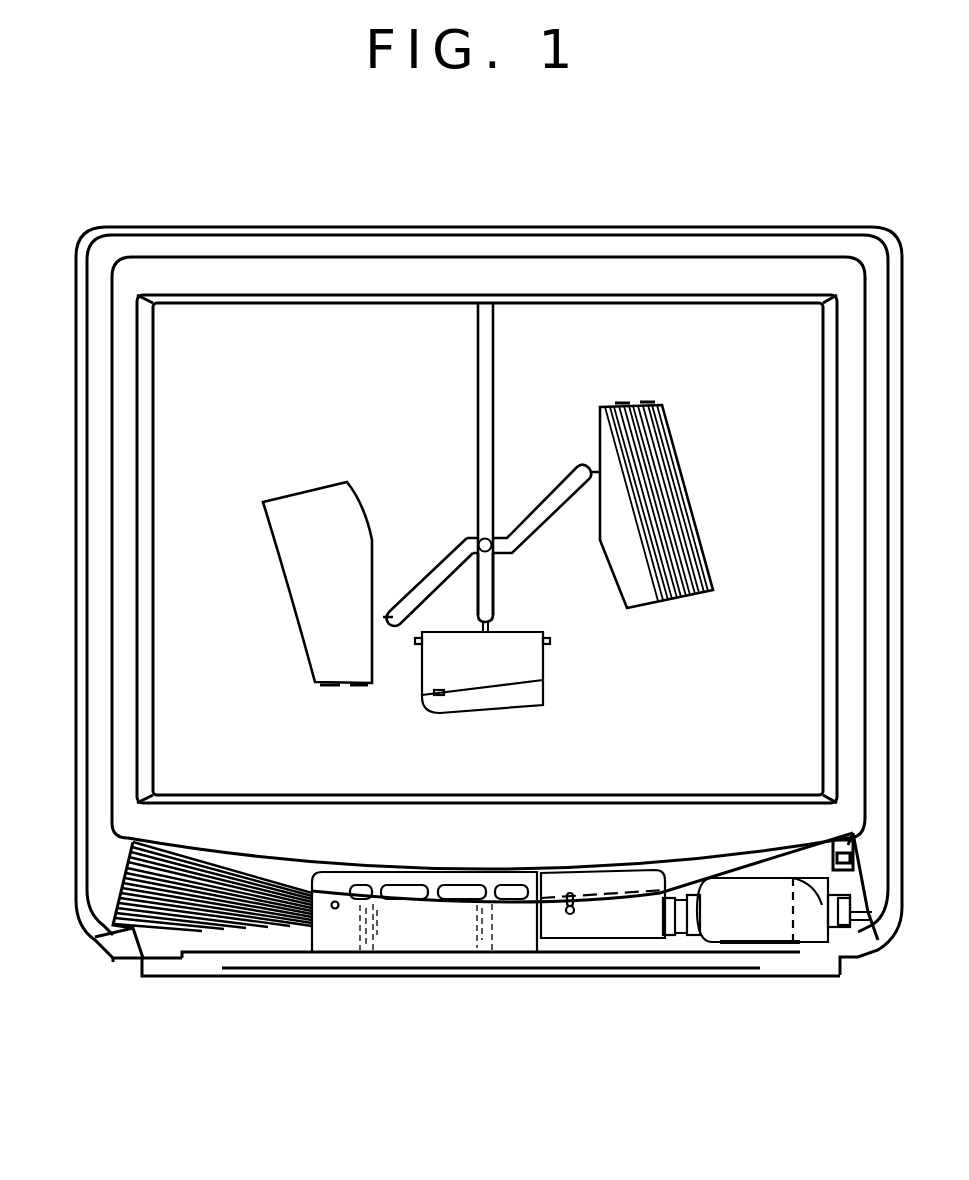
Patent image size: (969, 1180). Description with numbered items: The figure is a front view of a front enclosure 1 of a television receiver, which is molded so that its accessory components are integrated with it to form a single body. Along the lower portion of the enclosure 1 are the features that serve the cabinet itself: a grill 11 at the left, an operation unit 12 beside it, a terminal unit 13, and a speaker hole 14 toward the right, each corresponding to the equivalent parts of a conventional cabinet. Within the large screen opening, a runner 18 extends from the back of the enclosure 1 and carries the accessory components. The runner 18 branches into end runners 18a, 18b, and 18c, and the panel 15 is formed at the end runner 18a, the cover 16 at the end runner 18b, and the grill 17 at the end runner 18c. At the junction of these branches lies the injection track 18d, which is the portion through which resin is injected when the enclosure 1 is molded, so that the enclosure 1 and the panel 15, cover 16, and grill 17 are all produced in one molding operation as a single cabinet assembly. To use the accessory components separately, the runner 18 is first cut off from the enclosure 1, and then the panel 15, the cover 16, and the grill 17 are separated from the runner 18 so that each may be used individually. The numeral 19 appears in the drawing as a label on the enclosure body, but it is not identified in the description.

The front enclosure 1 is at (62, 1021).
The grill 11 is at (160, 928).
The operation unit 12 is at (434, 937).
The terminal unit 13 is at (580, 927).
The speaker hole 14 is at (757, 927).
The panel 15 is at (293, 597).
The cover 16 is at (482, 713).
The grill 17 is at (700, 540).
The runner 18 is at (495, 348).
The end runner 18a is at (430, 572).
The end runner 18b is at (496, 602).
The end runner 18c is at (548, 490).
The injection track 18d is at (477, 537).
The cabinet 19 is at (168, 636).